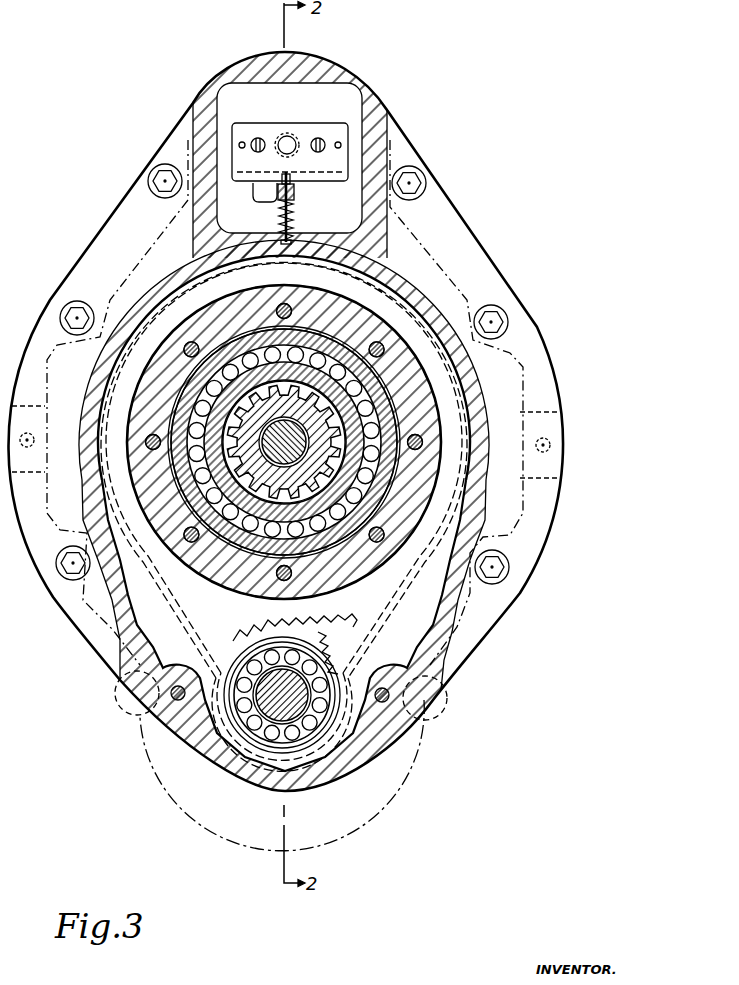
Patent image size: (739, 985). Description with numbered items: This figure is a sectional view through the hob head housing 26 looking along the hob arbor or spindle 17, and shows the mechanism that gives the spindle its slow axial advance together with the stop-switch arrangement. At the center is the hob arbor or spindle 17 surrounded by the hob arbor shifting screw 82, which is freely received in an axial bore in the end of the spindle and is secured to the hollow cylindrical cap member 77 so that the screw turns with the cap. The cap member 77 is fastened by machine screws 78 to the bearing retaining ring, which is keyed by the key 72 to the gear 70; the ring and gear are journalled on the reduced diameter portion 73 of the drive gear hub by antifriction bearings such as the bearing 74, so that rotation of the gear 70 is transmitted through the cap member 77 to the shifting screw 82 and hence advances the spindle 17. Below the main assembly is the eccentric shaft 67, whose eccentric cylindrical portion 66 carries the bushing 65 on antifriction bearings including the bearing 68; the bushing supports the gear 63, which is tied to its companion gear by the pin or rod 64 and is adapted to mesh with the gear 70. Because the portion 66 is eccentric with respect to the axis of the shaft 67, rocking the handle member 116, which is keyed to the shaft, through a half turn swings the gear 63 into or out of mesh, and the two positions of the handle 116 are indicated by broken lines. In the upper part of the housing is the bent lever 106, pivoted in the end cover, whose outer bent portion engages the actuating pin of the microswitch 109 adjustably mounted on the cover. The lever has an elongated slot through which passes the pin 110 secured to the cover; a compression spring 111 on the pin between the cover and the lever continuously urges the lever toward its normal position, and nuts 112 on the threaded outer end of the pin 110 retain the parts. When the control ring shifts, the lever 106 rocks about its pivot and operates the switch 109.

The hob arbor or spindle 17 is at (243, 443).
The hob head housing 26 is at (470, 245).
The gear 63 is at (336, 664).
The pin or rod 64 is at (347, 642).
The bushing 65 is at (240, 650).
The cylindrical portion of shaft 66 is at (308, 680).
The shaft 67 is at (262, 694).
The antifriction bearing 68 is at (248, 673).
The gear 70 is at (359, 627).
The key 72 is at (268, 612).
The reduced diameter portion of hub 73 is at (370, 464).
The antifriction bearing 74 is at (402, 386).
The hollow cylindrical cap member 77 is at (336, 302).
The machine screws 78 is at (290, 300).
The hob arbor shifting screw 82 is at (268, 432).
The bent lever 106 is at (296, 197).
The microswitch 109 is at (322, 117).
The pin 110 is at (282, 214).
The compression spring 111 is at (296, 218).
The nuts 112 is at (305, 178).
The handle member 116 is at (116, 693).